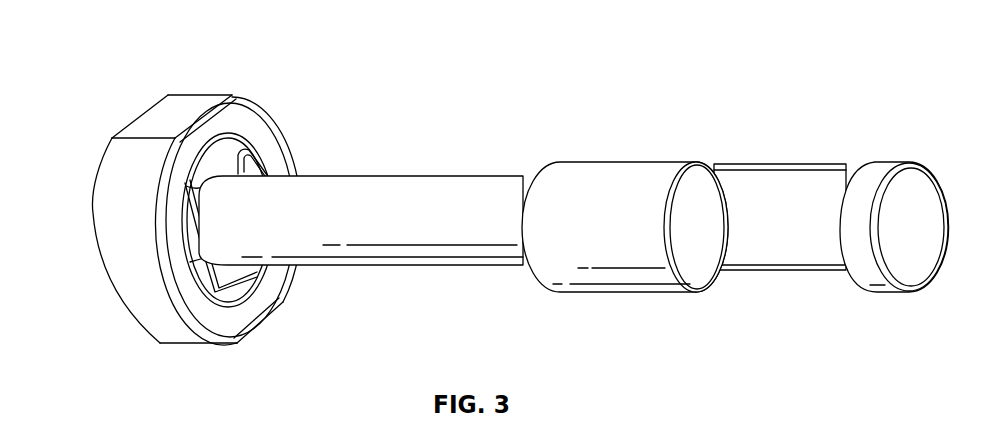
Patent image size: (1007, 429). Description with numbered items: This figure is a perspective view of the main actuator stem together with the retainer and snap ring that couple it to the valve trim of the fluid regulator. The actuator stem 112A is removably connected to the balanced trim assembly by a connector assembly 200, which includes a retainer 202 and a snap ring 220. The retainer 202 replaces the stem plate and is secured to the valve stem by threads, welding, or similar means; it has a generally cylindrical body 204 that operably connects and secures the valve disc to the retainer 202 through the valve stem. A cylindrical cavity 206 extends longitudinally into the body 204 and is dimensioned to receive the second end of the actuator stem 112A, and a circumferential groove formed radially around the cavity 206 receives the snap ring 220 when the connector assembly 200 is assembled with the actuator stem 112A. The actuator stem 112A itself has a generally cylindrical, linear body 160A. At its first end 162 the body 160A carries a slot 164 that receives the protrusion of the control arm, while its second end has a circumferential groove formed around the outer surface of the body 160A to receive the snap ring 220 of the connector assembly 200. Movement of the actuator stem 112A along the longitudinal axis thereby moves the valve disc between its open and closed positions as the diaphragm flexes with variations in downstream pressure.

The connector assembly 200 is at (205, 207).
The retainer 202 is at (92, 225).
The body 204 is at (140, 302).
The cavity 206 is at (216, 155).
The snap ring 220 is at (257, 152).
The actuator stem 112A is at (487, 152).
The body 160A is at (487, 225).
The slot 164 is at (797, 207).
The first end 162 is at (893, 162).